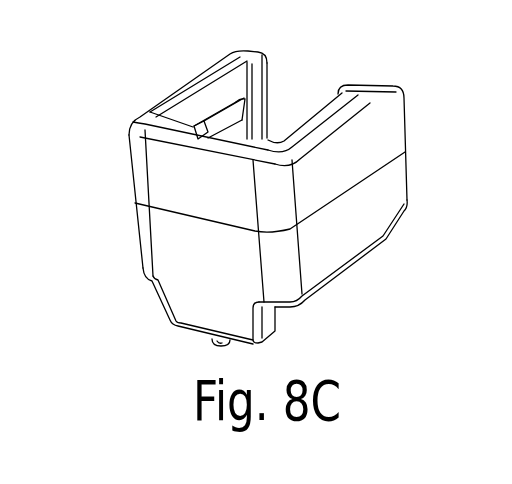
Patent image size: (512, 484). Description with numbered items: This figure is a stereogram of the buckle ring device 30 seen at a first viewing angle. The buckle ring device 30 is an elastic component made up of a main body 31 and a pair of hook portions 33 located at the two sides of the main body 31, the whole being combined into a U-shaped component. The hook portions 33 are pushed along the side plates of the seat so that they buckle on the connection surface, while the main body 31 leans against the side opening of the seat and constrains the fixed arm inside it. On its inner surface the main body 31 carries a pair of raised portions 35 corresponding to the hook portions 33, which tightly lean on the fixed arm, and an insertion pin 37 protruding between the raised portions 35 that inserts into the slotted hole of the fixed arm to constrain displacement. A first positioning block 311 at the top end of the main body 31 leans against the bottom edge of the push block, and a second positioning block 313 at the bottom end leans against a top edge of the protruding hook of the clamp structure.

The buckle ring device 30 is at (103, 93).
The main body 31 is at (173, 223).
The first positioning block 311 is at (193, 138).
The second positioning block 313 is at (190, 310).
The hook portions 33 is at (252, 53).
The raised portions 35 is at (175, 121).
The insertion pin 37 is at (242, 121).